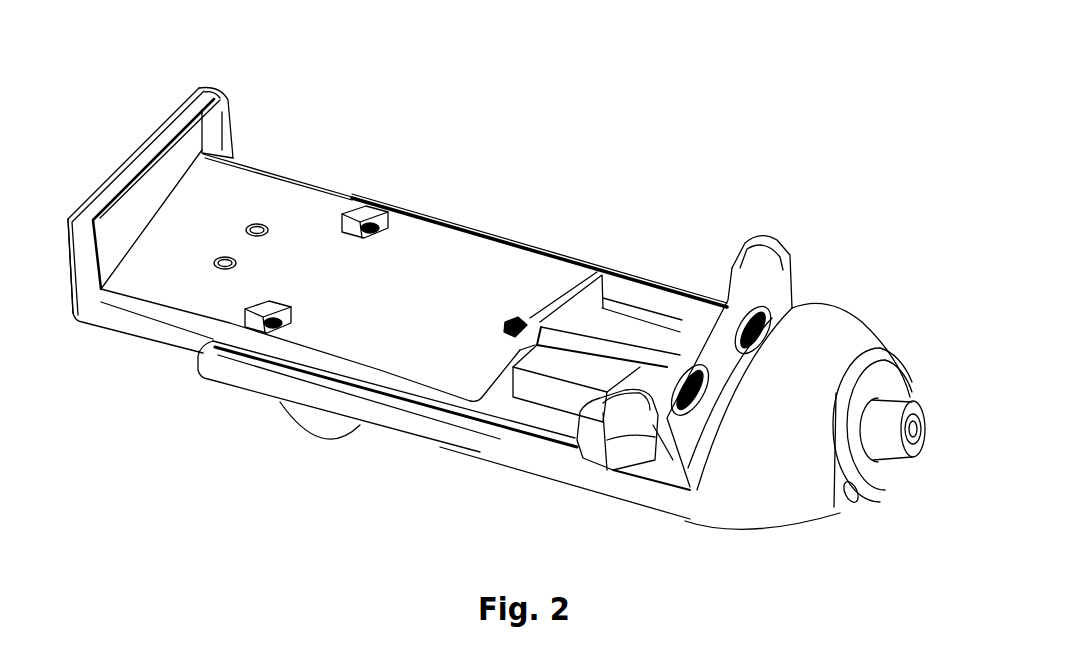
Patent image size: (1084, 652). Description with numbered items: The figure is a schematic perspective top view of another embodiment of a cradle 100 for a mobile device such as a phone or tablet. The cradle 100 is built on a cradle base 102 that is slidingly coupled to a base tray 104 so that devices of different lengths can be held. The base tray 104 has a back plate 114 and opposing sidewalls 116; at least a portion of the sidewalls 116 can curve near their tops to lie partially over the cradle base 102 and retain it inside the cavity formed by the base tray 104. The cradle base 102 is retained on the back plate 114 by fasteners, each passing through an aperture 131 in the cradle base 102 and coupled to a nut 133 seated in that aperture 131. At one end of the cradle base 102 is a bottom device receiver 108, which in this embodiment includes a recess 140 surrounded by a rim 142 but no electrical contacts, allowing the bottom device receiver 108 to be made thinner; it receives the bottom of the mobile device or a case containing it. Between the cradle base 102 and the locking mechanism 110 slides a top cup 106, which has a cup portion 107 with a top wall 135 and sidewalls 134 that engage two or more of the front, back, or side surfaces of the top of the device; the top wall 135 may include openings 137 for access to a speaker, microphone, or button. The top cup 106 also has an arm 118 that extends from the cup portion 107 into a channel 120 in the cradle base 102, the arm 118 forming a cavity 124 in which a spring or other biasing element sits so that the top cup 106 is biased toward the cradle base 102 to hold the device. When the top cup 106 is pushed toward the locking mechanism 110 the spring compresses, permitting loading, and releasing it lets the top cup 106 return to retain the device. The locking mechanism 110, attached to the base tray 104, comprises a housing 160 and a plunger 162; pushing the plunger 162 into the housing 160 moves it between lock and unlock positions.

The cradle 100 is at (403, 103).
The cradle base 102 is at (407, 230).
The base tray 104 is at (605, 310).
The top cup 106 is at (607, 453).
The cup portion 107 is at (627, 437).
The bottom device receiver 108 is at (87, 265).
The locking mechanism 110 is at (730, 483).
The back plate 114 is at (660, 330).
The sidewalls 116 is at (427, 427).
The arm 118 is at (565, 363).
The channel 120 is at (537, 327).
The cavity 124 is at (607, 363).
The aperture 131 is at (340, 217).
The nut 133 is at (262, 317).
The sidewalls 134 is at (750, 257).
The top wall 135 is at (782, 258).
The openings 137 is at (763, 333).
The recess 140 is at (180, 154).
The rim 142 is at (220, 103).
The housing 160 is at (857, 467).
The plunger 162 is at (912, 403).